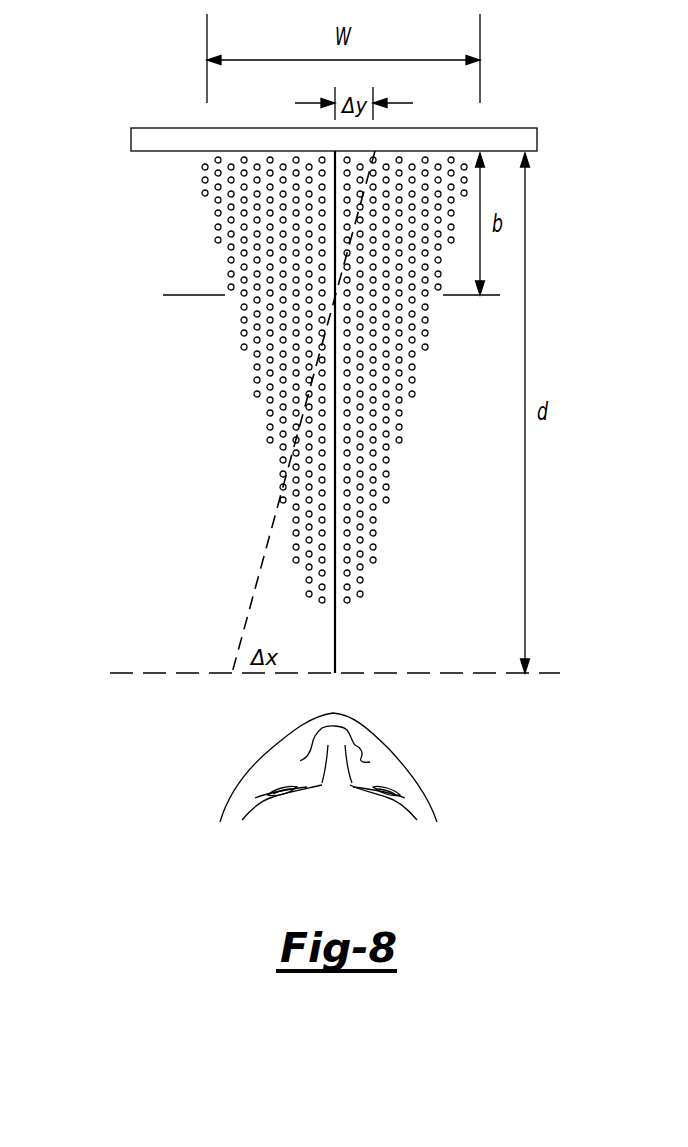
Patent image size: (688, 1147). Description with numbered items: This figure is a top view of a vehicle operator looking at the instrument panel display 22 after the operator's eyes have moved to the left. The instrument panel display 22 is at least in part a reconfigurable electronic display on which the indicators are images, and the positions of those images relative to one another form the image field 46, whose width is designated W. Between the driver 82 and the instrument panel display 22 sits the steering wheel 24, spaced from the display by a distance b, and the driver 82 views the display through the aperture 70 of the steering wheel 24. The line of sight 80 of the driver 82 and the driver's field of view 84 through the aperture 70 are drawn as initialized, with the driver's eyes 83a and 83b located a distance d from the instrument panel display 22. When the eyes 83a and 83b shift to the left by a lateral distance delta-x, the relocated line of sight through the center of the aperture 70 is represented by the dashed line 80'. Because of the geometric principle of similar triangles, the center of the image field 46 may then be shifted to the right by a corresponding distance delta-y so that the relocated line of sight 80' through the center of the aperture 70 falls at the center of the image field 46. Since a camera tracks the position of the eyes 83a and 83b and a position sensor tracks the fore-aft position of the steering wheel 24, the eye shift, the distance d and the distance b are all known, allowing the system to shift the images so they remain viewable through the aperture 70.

The instrument panel display 22 is at (158, 128).
The image field 46 is at (263, 158).
The steering wheel 24 is at (187, 292).
The aperture 70 is at (254, 296).
The field of view 84 is at (267, 452).
The line of sight 80 is at (362, 412).
The relocated line of sight 80' is at (264, 412).
The driver 82 is at (228, 745).
The eye 83a is at (282, 793).
The eye 83b is at (390, 793).